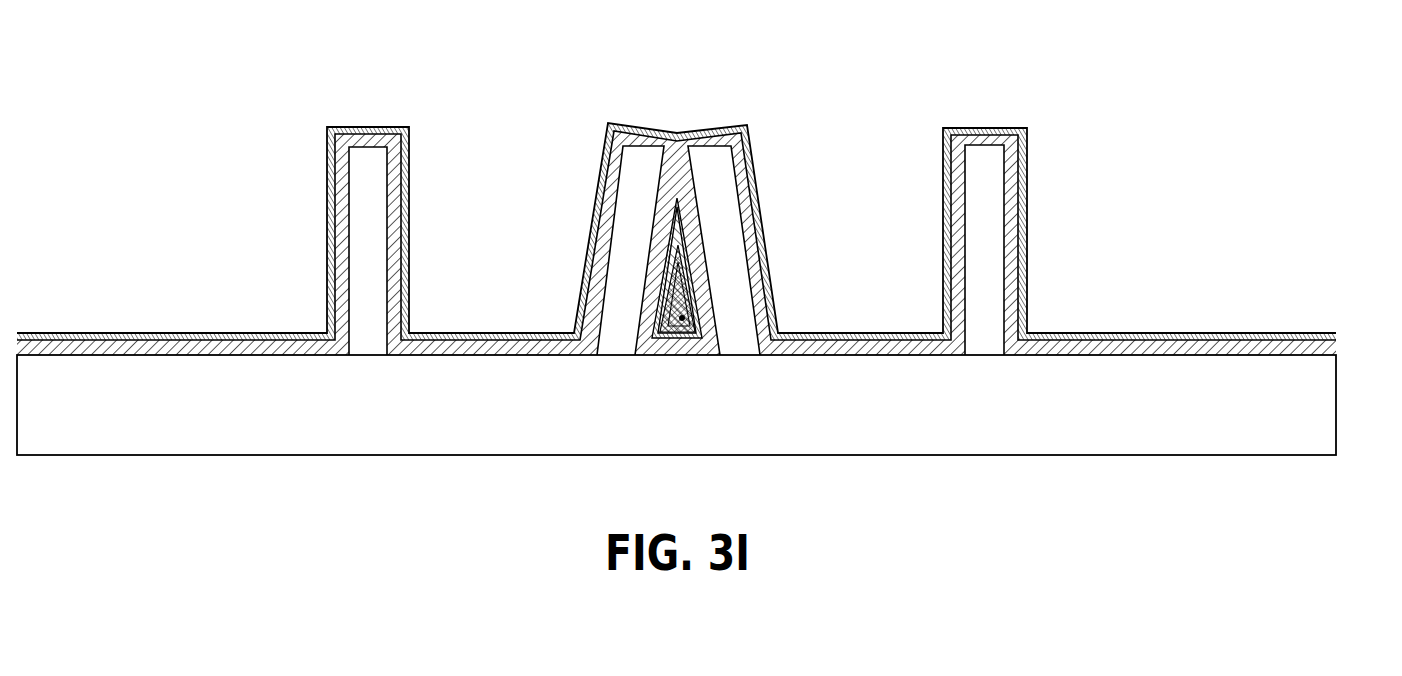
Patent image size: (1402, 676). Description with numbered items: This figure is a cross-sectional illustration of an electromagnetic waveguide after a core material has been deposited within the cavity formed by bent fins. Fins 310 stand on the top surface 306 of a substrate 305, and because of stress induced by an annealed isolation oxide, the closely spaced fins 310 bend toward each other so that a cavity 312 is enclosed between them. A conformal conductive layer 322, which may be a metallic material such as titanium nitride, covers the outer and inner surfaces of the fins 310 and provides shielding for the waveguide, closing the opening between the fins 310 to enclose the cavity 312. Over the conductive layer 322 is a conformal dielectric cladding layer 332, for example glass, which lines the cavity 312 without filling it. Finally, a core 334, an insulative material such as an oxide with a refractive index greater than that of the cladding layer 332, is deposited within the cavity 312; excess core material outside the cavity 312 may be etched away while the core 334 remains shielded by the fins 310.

The substrate 305 is at (1317, 410).
The top surface of substrate 306 is at (1237, 342).
The fin 310 is at (712, 170).
The cavity 312 is at (680, 320).
The conductive layer 322 is at (757, 201).
The cladding layer 332 is at (640, 127).
The core 334 is at (688, 295).